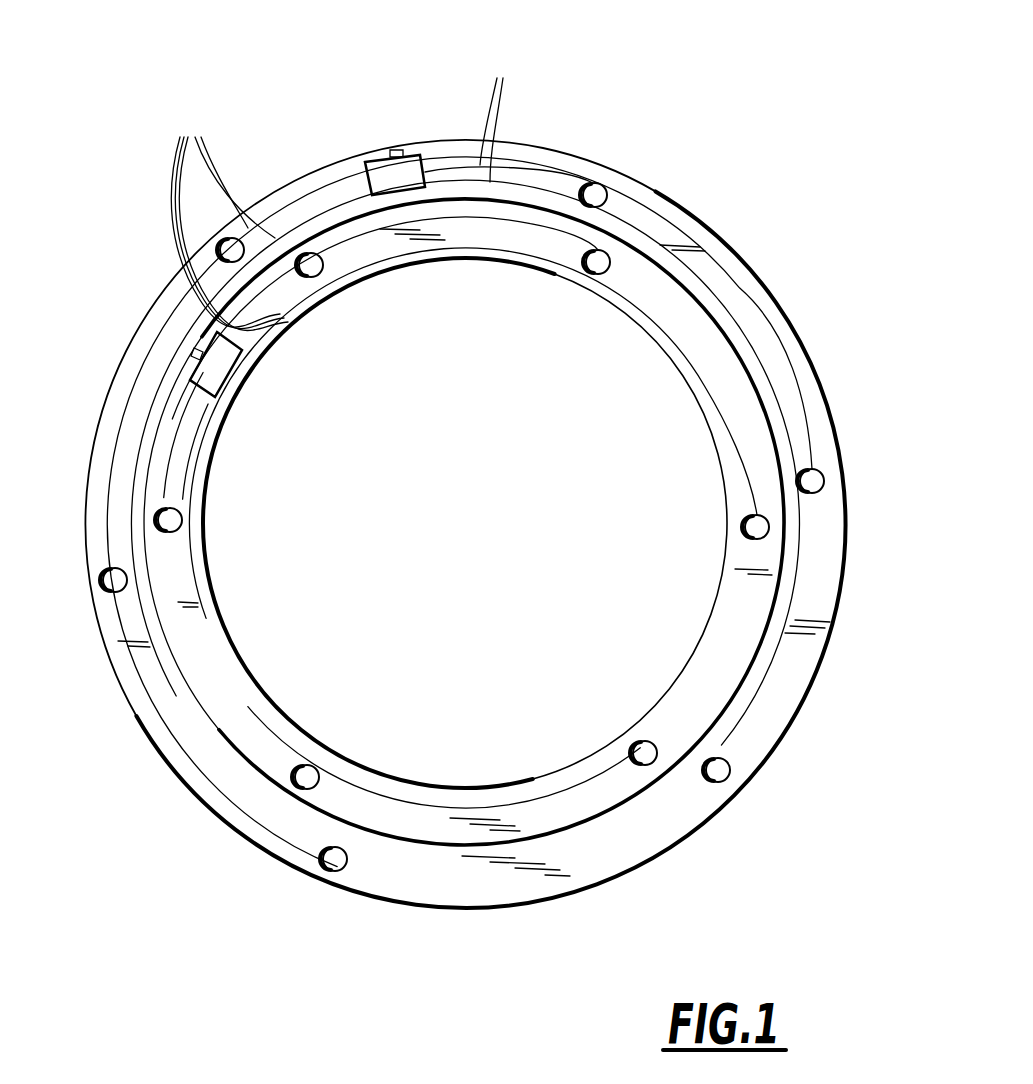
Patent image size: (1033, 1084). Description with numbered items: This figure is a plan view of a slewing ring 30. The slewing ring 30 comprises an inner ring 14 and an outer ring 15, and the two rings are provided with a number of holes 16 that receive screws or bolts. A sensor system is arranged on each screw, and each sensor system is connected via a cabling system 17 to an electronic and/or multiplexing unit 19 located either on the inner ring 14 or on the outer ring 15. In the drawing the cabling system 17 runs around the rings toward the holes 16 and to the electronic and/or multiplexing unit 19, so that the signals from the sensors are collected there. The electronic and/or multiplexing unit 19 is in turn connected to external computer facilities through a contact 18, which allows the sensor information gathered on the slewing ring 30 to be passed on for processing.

The inner ring 14 is at (587, 810).
The outer ring 15 is at (529, 900).
The holes 16 is at (605, 252).
The cabling system 17 is at (200, 422).
The contact 18 is at (397, 152).
The electronic and/or multiplexing unit 19 is at (402, 152).
The slewing ring 30 is at (462, 493).